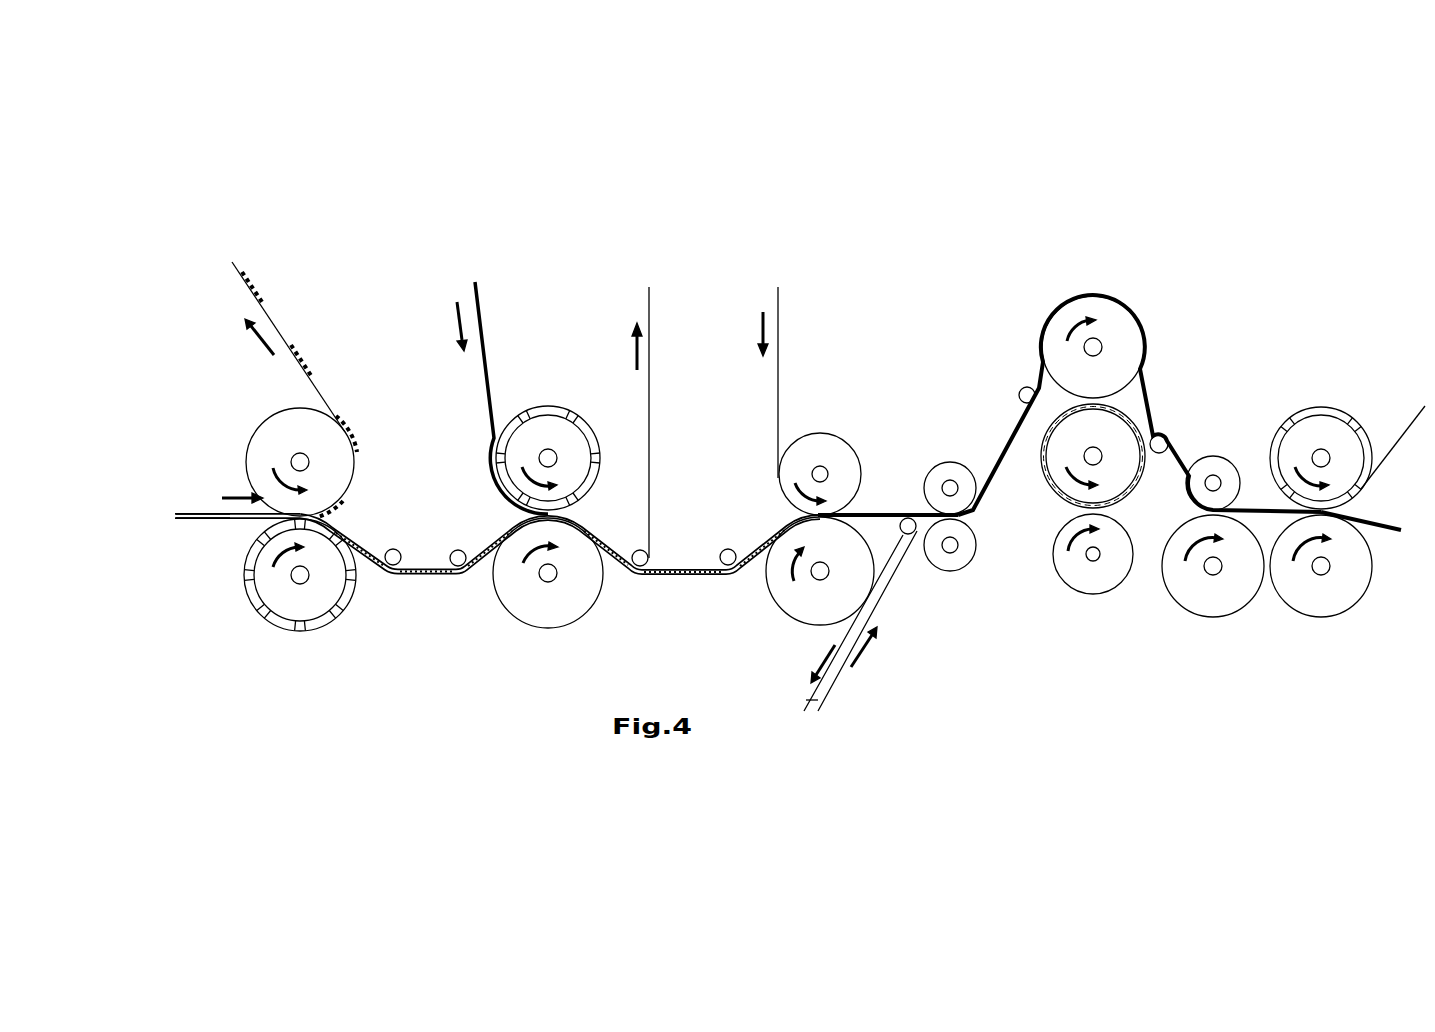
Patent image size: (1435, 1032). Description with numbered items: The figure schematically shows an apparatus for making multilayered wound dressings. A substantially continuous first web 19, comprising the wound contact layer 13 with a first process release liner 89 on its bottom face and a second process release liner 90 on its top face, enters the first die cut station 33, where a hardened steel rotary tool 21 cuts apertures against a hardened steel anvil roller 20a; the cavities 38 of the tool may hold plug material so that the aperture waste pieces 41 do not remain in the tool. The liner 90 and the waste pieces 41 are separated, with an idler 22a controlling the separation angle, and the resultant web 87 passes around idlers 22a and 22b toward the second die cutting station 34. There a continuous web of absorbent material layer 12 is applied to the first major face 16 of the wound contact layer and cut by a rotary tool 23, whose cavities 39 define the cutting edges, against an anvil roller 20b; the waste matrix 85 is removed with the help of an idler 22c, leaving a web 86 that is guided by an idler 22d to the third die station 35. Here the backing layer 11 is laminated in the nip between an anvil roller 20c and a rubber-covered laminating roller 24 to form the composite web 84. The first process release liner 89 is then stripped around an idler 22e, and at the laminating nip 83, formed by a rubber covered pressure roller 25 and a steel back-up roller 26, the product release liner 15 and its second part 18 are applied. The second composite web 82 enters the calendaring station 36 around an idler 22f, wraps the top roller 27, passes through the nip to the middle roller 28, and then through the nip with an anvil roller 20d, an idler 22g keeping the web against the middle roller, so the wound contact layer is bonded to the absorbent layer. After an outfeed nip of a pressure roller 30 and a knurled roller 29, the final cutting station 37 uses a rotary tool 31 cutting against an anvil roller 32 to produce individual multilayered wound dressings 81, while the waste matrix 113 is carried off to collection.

The backing layer 11 is at (777, 397).
The absorbent material layer 12 is at (484, 372).
The wound contact layer 13 is at (202, 521).
The product release liner 15 is at (880, 621).
The product release liner second part 18 is at (889, 596).
The first major face 16 is at (500, 533).
The first web 19 is at (164, 500).
The anvil roller 20a is at (264, 417).
The anvil roller 20b is at (542, 600).
The anvil roller 20c is at (816, 604).
The anvil roller 20d is at (1101, 575).
The rotary tool 21 is at (250, 606).
The idler 22a is at (396, 548).
The idler 22b is at (461, 549).
The idler 22c is at (641, 549).
The idler 22d is at (730, 549).
The idler 22e is at (902, 531).
The idler 22f is at (1025, 389).
The idler 22g is at (1162, 441).
The rotary tool 23 is at (547, 406).
The laminating roller 24 is at (816, 449).
The pressure roller 25 is at (943, 478).
The back-up roller 26 is at (964, 551).
The top roller 27 is at (1128, 336).
The middle roller 28 is at (1129, 415).
The knurled roller 29 is at (1218, 599).
The pressure roller 30 is at (1226, 467).
The rotary tool 31 is at (1324, 415).
The anvil roller 32 is at (1344, 592).
The first die cut station 33 is at (372, 405).
The second die cutting station 34 is at (565, 354).
The third die station 35 is at (828, 372).
The calendaring station 36 is at (1136, 295).
The final cutting station 37 is at (1290, 368).
The cavities 38 is at (333, 615).
The cavities 39 is at (591, 486).
The aperture waste pieces 41 is at (262, 303).
The multilayered wound dressing 81 is at (1382, 531).
The second composite web 82 is at (999, 472).
The laminating nip 83 is at (966, 456).
The composite web 84 is at (865, 511).
The waste matrix 85 is at (652, 413).
The web 86 is at (680, 567).
The web 87 is at (458, 578).
The first process release liner 89 is at (203, 522).
The second process release liner 90 is at (192, 514).
The waste matrix 113 is at (1412, 418).